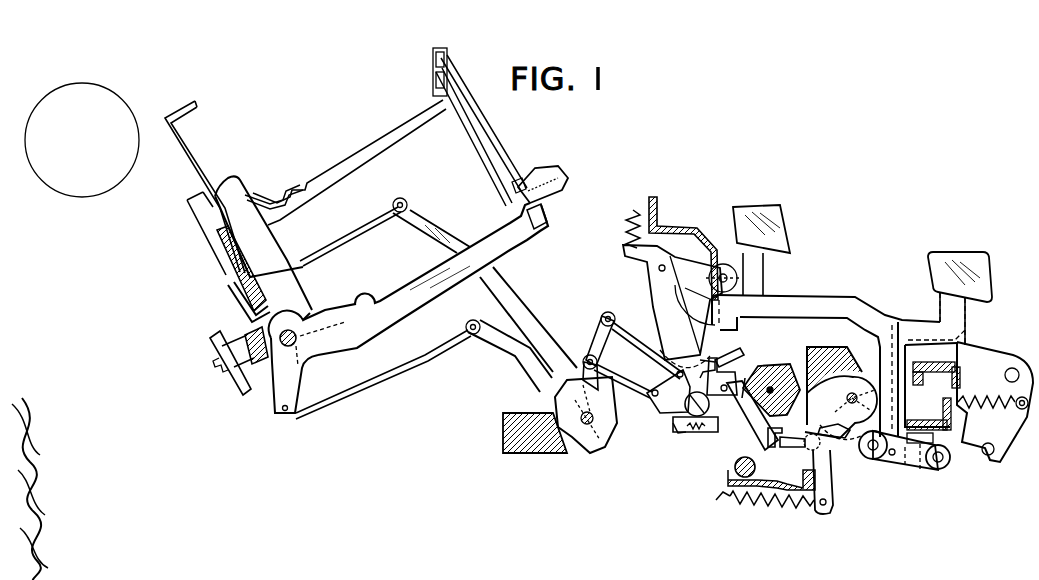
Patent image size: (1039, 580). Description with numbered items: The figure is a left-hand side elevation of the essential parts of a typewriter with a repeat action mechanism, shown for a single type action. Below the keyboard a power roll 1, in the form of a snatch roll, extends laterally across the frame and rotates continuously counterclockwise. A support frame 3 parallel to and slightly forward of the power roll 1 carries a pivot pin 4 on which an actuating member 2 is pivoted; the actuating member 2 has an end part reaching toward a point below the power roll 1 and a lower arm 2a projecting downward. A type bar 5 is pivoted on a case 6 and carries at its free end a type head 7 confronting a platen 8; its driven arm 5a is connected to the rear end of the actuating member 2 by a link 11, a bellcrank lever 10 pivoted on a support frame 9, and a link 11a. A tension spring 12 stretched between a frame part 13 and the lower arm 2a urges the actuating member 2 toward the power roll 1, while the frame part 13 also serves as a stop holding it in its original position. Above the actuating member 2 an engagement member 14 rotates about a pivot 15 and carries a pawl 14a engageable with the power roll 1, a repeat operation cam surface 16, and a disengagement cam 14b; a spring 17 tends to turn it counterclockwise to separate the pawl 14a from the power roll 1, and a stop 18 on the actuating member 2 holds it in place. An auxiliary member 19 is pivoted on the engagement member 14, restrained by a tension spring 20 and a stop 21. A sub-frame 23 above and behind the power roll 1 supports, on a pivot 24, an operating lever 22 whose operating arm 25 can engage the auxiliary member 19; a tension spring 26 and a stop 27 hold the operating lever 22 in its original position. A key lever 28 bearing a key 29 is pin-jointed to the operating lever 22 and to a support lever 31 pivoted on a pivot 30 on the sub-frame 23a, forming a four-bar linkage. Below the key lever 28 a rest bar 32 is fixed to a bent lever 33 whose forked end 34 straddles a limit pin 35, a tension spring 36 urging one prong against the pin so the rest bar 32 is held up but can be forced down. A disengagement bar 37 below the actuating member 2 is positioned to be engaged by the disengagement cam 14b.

The power roll 1 is at (780, 367).
The actuating member 2 is at (838, 434).
The lower arm 2a is at (835, 503).
The support frame 3 is at (832, 358).
The pivot pin 4 is at (855, 394).
The type bar 5 is at (405, 297).
The driven arm 5a is at (275, 400).
The case 6 is at (292, 297).
The type head 7 is at (543, 170).
The platen 8 is at (99, 196).
The support frame 9 is at (505, 437).
The bellcrank lever 10 is at (477, 344).
The link 11 is at (379, 388).
The link 11a is at (645, 375).
The tension spring 12 is at (767, 508).
The frame part 13 is at (730, 480).
The engagement member 14 is at (740, 413).
The pawl 14a is at (747, 377).
The disengagement cam 14b is at (737, 463).
The pivot 15 is at (681, 411).
The repeat operation cam surface 16 is at (716, 364).
The spring 17 is at (800, 446).
The stop 18 is at (772, 446).
The auxiliary member 19 is at (705, 430).
The tension spring 20 is at (673, 432).
The stop 21 is at (710, 388).
The operating lever 22 is at (652, 293).
The sub-frame 23 is at (708, 238).
The sub-frame 23a is at (888, 462).
The pivot 24 is at (724, 275).
The operating arm 25 is at (670, 343).
The tension spring 26 is at (628, 250).
The stop 27 is at (676, 232).
The key lever 28 is at (793, 306).
The key 29 is at (933, 283).
The pivot 30 is at (940, 470).
The support lever 31 is at (922, 466).
The rest bar 32 is at (937, 375).
The bent lever 33 is at (1015, 368).
The forked end 34 is at (1017, 448).
The limit pin 35 is at (988, 455).
The tension spring 36 is at (985, 393).
The disengagement bar 37 is at (745, 503).